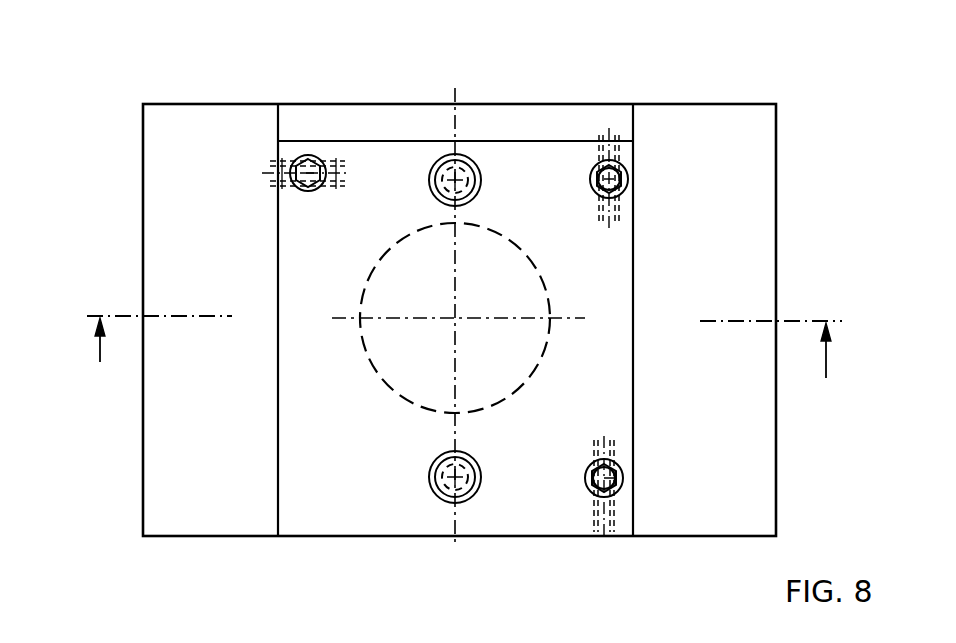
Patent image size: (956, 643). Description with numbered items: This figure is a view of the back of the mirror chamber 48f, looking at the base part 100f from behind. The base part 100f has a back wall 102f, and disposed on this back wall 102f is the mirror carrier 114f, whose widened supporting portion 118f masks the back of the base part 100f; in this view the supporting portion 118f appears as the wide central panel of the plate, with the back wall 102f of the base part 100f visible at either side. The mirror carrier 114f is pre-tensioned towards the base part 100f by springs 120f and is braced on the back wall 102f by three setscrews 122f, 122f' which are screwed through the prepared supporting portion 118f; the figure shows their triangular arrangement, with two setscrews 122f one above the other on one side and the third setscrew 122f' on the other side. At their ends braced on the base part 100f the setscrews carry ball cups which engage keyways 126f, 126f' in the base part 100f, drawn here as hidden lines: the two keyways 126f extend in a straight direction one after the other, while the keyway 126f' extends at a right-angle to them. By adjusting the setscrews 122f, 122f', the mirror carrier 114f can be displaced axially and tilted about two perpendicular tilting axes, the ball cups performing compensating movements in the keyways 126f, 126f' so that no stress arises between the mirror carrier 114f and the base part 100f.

The base part 100f is at (165, 134).
The mirror chamber 48f is at (132, 170).
The back wall 102f is at (203, 502).
The mirror carrier 114f is at (690, 260).
The supporting portion 118f is at (298, 261).
The springs 120f is at (476, 172).
The setscrews 122f is at (649, 319).
The keyways 126f is at (600, 319).
The hexagon screw 122f' is at (253, 121).
The keyway 126f' is at (302, 120).